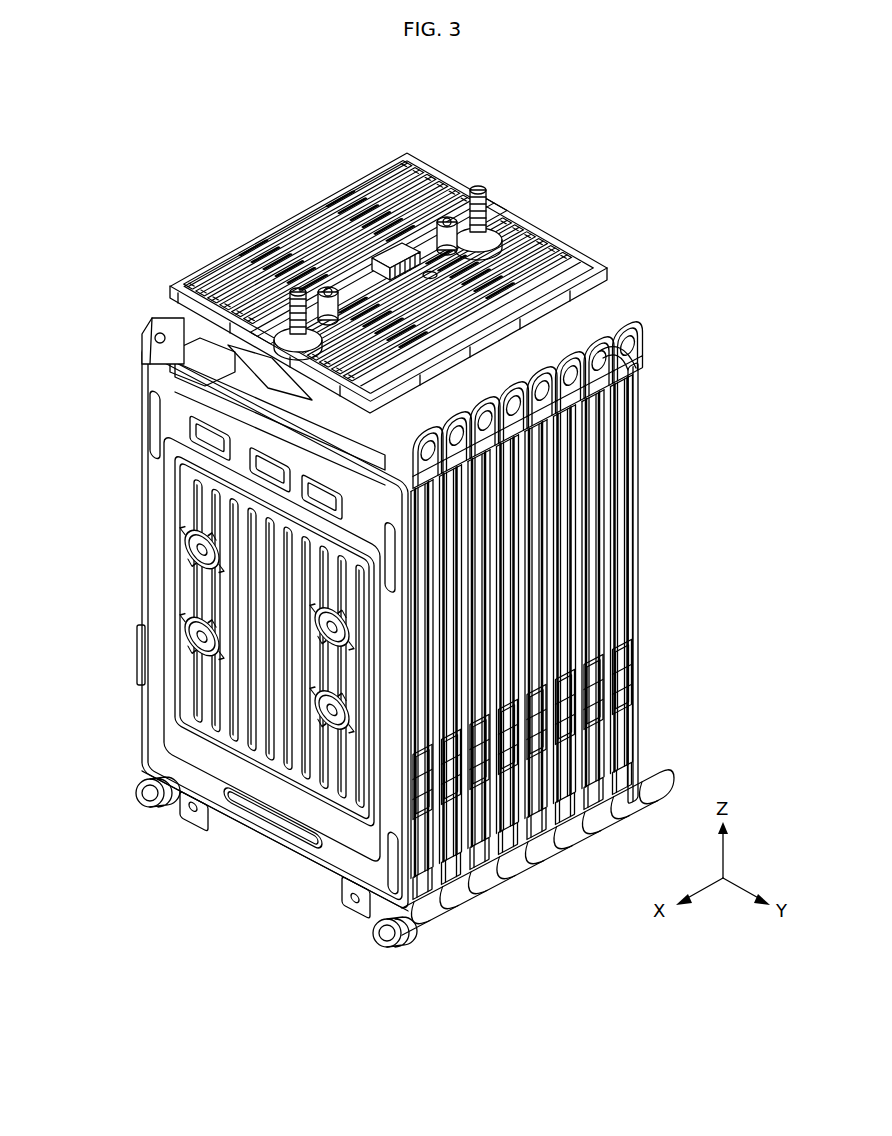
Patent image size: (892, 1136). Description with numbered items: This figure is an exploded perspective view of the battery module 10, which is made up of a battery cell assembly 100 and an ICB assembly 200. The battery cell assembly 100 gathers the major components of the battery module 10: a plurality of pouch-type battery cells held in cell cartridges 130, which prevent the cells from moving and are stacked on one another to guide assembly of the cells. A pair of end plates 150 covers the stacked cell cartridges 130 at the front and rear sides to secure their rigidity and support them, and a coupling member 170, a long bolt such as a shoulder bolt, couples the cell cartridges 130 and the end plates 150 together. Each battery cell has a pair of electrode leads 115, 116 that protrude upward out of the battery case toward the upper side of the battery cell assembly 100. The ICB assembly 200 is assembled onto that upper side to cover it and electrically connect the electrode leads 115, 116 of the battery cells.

The battery module 10 is at (195, 143).
The battery cell assembly 100 is at (686, 430).
The electrode lead 115 is at (242, 378).
The electrode lead 116 is at (607, 329).
The cell cartridge 130 is at (627, 510).
The end plate 150 is at (150, 497).
The coupling member 170 is at (155, 322).
The ICB assembly 200 is at (541, 182).